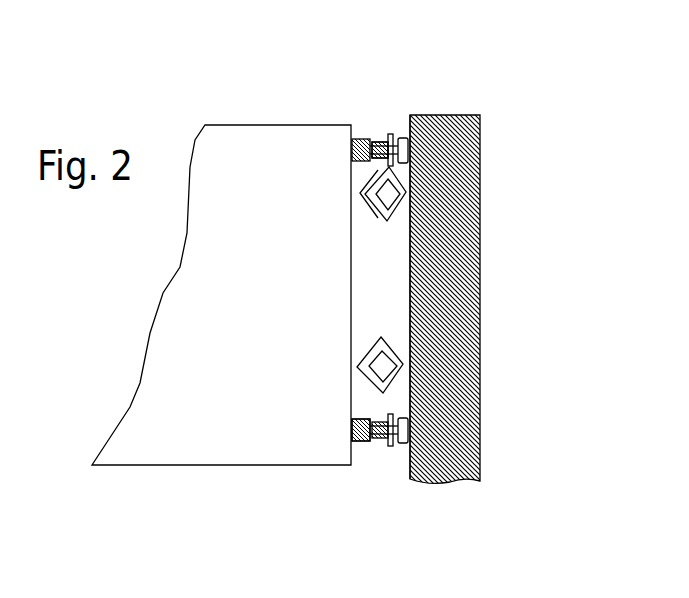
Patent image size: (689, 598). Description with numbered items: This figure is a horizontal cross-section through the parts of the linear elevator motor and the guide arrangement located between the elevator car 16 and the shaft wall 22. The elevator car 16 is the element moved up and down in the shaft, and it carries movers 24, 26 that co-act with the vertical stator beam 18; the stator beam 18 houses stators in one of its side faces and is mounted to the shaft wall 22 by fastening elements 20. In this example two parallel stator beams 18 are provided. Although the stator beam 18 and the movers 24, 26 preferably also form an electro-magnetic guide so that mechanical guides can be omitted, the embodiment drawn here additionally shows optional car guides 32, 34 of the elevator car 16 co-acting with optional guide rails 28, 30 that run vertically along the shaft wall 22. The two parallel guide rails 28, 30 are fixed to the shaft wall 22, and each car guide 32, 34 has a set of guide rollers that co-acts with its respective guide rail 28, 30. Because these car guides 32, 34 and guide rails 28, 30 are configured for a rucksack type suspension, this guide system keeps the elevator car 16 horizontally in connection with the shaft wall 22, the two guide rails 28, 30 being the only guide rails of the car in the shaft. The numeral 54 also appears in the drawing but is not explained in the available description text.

The elevator car 16 is at (210, 347).
The stator beam 18 is at (390, 197).
The fastening elements 20 is at (398, 197).
The shaft wall 22 is at (440, 242).
The mover 24 is at (373, 183).
The mover 26 is at (360, 370).
The guide rail 28 is at (427, 114).
The guide rail 30 is at (398, 445).
The car guide 32 is at (368, 140).
The car guide 34 is at (366, 445).
The element 54 is at (533, 597).